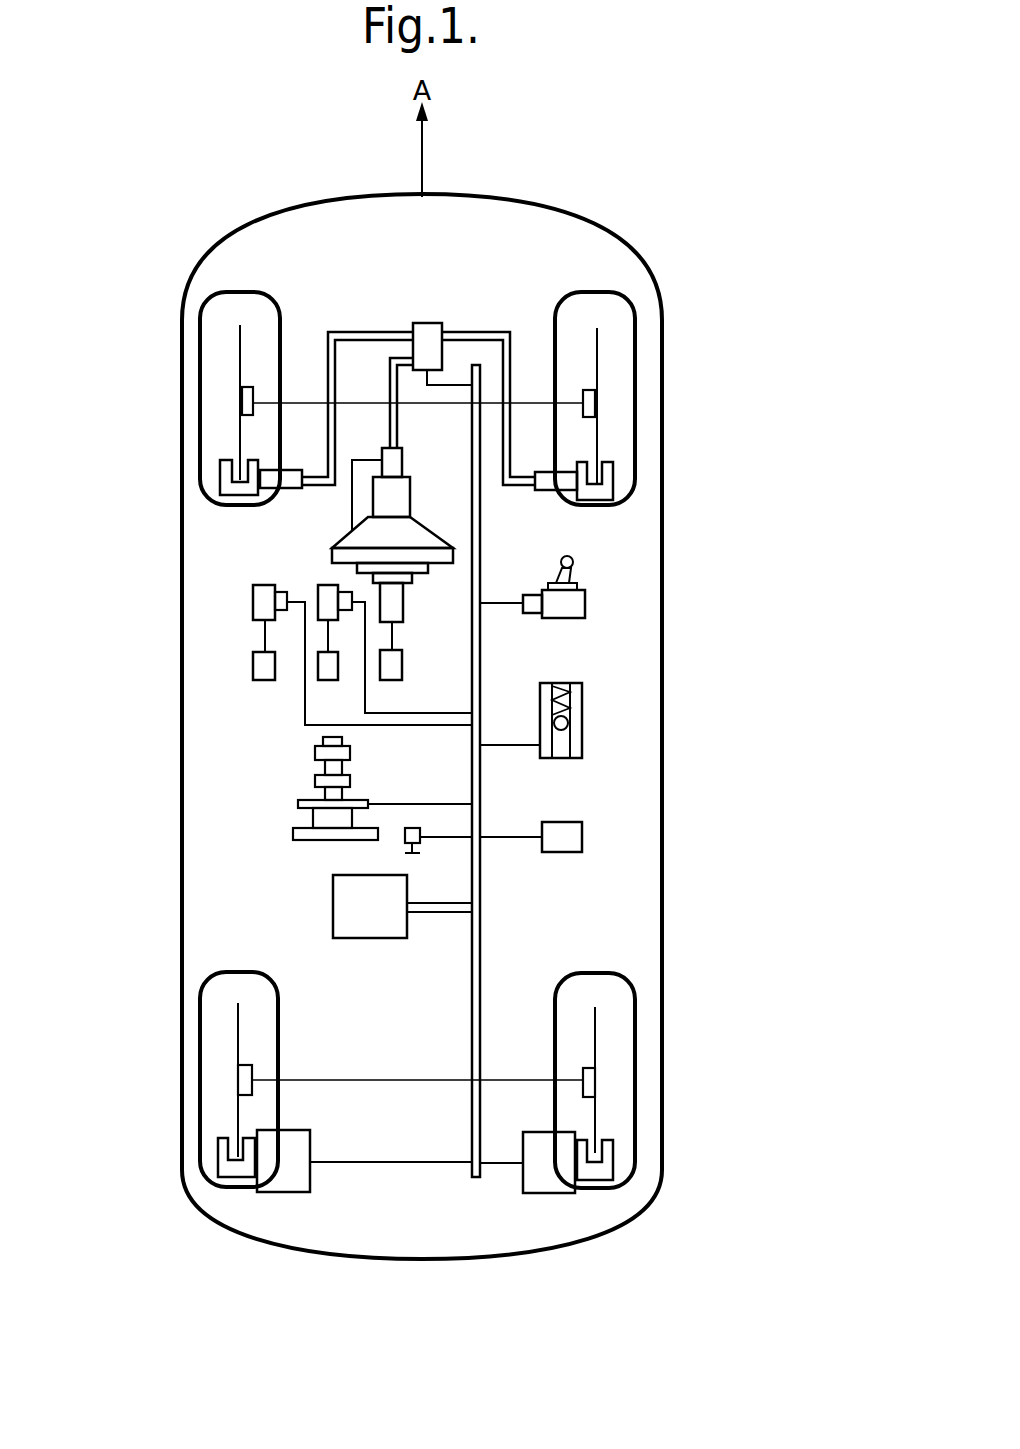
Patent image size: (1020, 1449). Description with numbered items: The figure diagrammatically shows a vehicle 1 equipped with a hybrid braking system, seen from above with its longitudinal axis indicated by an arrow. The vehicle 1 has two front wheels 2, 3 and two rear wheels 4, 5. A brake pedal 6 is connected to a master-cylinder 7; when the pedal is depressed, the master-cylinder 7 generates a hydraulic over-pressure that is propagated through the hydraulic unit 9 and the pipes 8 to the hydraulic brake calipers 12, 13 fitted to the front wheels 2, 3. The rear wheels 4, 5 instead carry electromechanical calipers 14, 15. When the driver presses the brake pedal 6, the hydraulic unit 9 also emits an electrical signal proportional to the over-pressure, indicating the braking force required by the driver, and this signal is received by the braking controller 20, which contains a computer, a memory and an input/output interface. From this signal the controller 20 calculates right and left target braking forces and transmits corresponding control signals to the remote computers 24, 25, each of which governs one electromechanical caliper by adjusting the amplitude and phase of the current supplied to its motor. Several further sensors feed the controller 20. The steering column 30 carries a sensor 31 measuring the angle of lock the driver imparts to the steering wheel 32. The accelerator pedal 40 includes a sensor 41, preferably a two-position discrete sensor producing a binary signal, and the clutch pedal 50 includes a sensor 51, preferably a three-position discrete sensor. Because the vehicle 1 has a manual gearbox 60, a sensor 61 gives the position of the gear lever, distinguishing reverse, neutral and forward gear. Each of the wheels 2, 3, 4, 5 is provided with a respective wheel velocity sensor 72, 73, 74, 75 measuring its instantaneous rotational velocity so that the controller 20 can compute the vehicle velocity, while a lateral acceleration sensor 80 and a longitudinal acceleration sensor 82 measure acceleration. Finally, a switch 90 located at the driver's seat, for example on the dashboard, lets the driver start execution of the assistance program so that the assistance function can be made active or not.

The vehicle 1 is at (682, 990).
The front wheel 2 is at (212, 340).
The front wheel 3 is at (623, 363).
The rear wheel 4 is at (208, 1113).
The rear wheel 5 is at (617, 1110).
The brake pedal 6 is at (395, 670).
The master-cylinder 7 is at (403, 502).
The pipes 8 is at (388, 378).
The hydraulic unit 9 is at (426, 324).
The hydraulic brake caliper 12 is at (220, 478).
The hydraulic brake caliper 13 is at (613, 482).
The electromechanical caliper 14 is at (218, 1160).
The electromechanical caliper 15 is at (610, 1172).
The braking controller 20 is at (337, 912).
The remote computer 24 is at (273, 1187).
The remote computer 25 is at (551, 1186).
The steering column 30 is at (330, 768).
The sensor 31 is at (298, 803).
The steering wheel 32 is at (292, 833).
The accelerator pedal 40 is at (327, 675).
The sensor 41 is at (347, 597).
The clutch pedal 50 is at (262, 670).
The sensor 51 is at (283, 595).
The manual gearbox 60 is at (573, 560).
The sensor 61 is at (533, 613).
The wheel velocity sensor 72 is at (242, 404).
The wheel velocity sensor 73 is at (595, 404).
The wheel velocity sensor 74 is at (238, 1080).
The wheel velocity sensor 75 is at (595, 1078).
The lateral acceleration sensor 80 is at (577, 838).
The longitudinal acceleration sensor 82 is at (582, 720).
The switch 90 is at (423, 840).